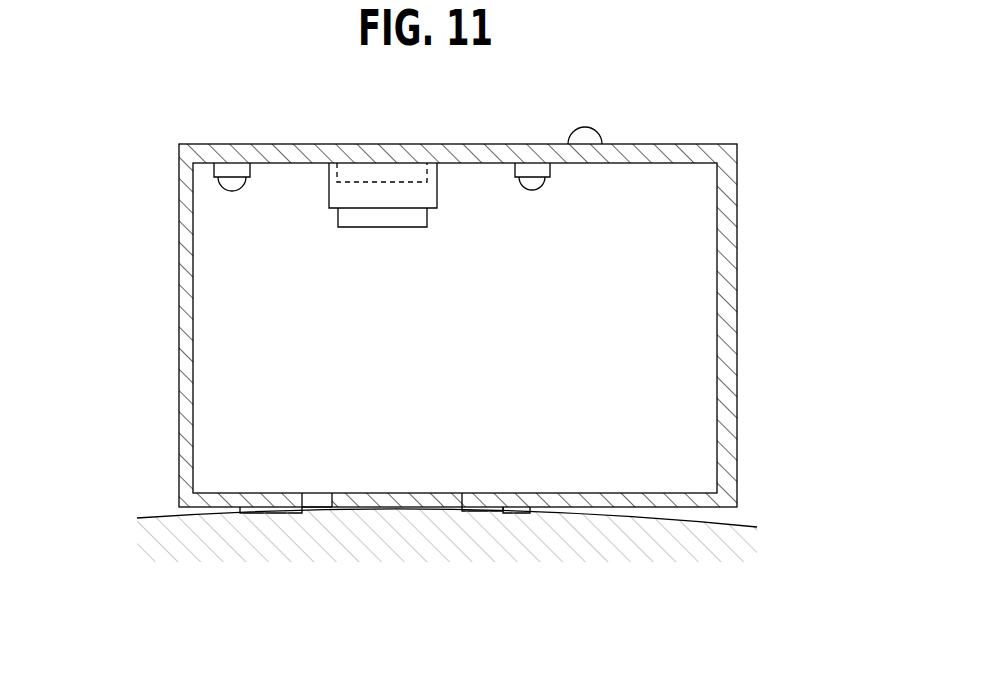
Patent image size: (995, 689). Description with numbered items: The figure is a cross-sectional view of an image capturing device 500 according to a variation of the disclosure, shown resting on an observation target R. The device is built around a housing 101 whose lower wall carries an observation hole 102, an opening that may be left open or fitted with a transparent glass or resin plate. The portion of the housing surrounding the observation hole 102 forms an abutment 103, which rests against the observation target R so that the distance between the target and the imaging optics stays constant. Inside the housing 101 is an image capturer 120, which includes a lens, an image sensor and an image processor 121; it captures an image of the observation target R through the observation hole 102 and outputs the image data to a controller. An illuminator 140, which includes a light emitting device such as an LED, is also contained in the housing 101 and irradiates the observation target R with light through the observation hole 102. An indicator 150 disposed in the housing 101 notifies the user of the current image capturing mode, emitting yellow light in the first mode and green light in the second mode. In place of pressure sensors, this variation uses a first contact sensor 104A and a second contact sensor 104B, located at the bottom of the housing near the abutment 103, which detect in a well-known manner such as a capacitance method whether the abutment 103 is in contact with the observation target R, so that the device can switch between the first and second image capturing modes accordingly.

The image capturing device 500 is at (472, 118).
The housing 101 is at (288, 143).
The indicator 150 is at (582, 128).
The illuminator 140 is at (219, 183).
The image capturer 120 is at (338, 214).
The image processor 121 is at (352, 182).
The second contact sensor 104B is at (240, 513).
The observation hole 102 is at (302, 507).
The abutment 103 is at (465, 512).
The first contact sensor 104A is at (505, 512).
The observation target R is at (649, 521).